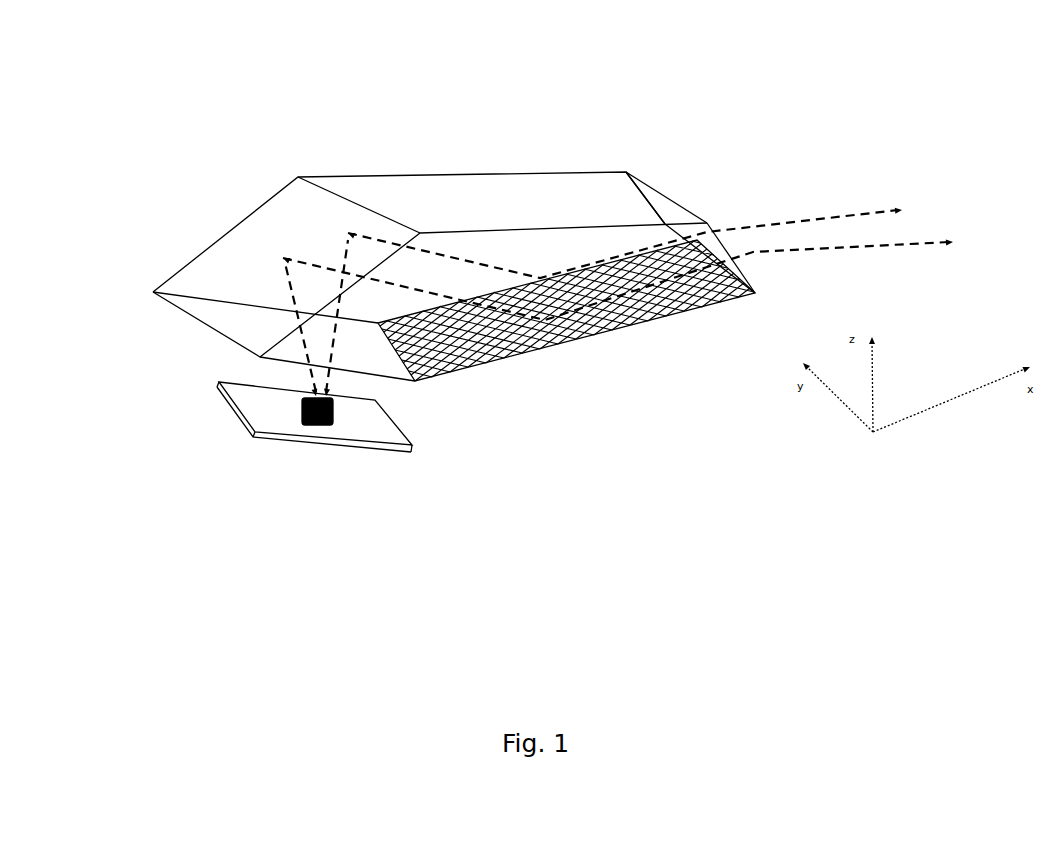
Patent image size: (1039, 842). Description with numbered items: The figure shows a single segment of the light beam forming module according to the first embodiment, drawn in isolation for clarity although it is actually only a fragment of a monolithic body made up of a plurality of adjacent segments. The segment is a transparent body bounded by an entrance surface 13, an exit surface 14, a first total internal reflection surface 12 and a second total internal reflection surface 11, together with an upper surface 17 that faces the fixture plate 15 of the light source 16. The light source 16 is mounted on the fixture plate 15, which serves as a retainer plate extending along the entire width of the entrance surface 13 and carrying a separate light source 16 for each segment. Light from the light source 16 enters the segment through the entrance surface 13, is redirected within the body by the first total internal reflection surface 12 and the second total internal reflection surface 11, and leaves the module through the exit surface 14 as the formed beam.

The second total internal reflection surface 11 is at (553, 358).
The first total internal reflection surface 12 is at (207, 229).
The entrance surface 13 is at (397, 386).
The exit surface 14 is at (676, 197).
The fixture plate 15 is at (234, 410).
The light source 16 is at (345, 412).
The upper surface 17 is at (491, 190).